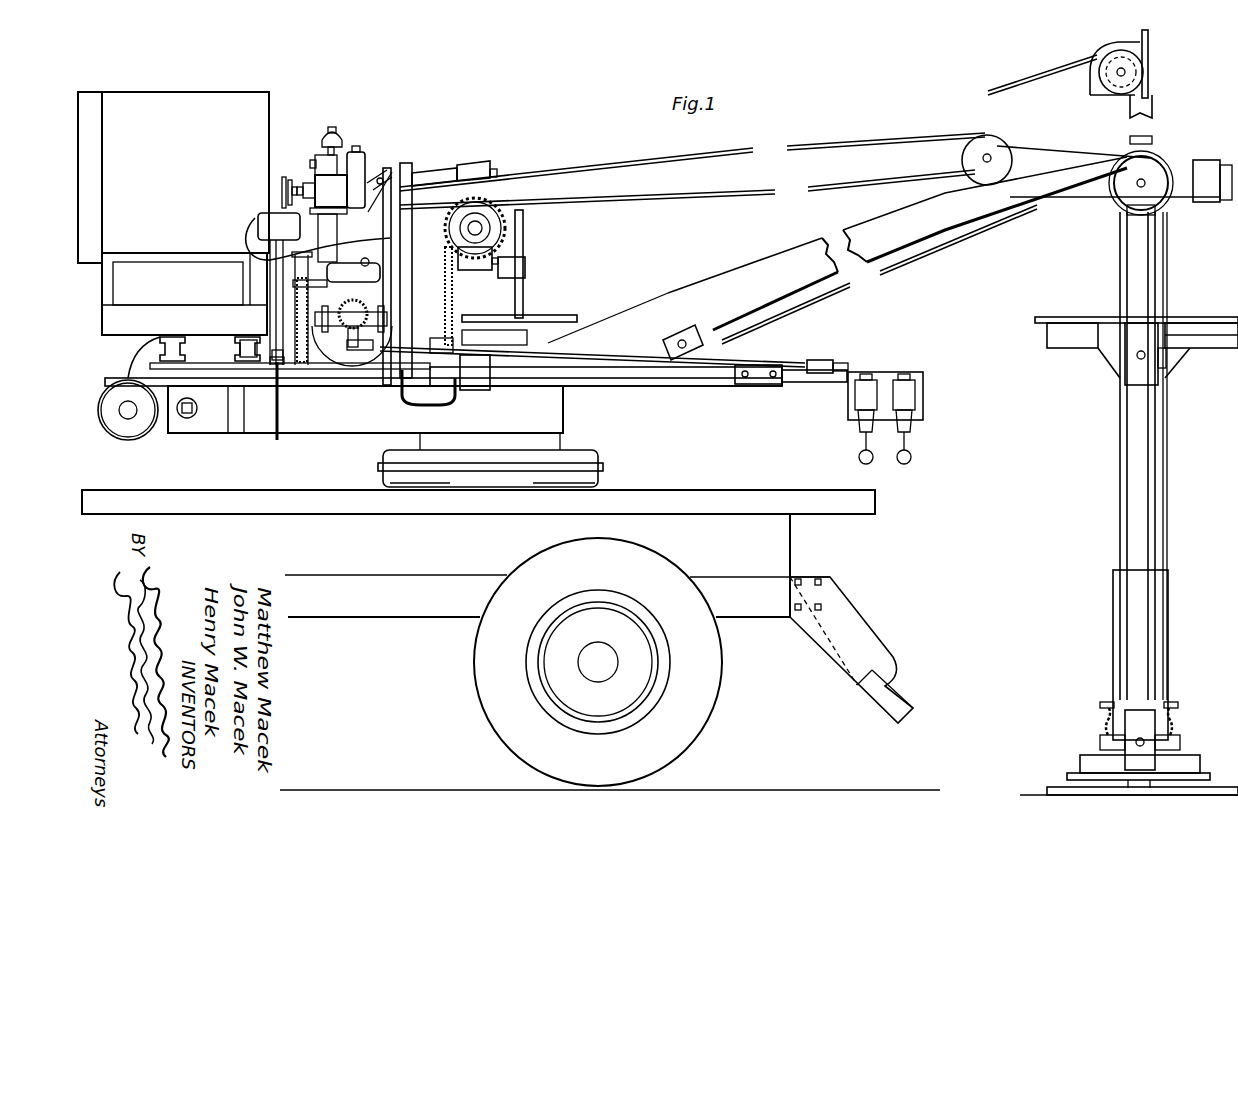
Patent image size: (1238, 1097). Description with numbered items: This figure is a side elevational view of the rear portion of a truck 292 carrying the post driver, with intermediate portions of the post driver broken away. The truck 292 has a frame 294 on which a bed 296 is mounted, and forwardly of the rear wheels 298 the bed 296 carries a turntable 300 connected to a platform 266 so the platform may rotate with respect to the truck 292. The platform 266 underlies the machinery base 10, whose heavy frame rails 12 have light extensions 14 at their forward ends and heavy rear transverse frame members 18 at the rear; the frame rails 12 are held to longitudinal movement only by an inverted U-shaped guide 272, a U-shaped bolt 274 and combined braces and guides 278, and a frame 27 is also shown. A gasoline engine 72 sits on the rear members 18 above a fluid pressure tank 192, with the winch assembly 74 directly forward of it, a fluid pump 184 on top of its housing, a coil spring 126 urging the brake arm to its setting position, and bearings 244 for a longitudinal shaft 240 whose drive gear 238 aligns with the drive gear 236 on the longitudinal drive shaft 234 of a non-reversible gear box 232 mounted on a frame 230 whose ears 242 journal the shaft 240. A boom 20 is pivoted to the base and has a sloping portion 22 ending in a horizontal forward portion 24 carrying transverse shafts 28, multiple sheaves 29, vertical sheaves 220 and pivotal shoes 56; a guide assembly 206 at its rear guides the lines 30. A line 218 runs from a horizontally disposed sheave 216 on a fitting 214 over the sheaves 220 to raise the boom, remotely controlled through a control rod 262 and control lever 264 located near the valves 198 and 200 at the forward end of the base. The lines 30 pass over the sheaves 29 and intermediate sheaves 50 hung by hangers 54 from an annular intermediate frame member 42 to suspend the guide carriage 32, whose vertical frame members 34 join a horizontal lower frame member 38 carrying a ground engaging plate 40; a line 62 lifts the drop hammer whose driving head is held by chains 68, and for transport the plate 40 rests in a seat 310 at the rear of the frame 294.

The machinery base 10 is at (628, 391).
The frame rails 12 is at (723, 374).
The extensions 14 is at (793, 376).
The rear transverse frame members 18 is at (165, 340).
The boom 20 is at (773, 244).
The upwardly and forwardly sloping portion 22 is at (945, 222).
The horizontal forward portion 24 is at (1047, 170).
The carriage frame 27 is at (365, 423).
The transverse shaft 28 is at (1150, 190).
The multiple sheave 29 is at (1148, 168).
The line 30 is at (1040, 208).
The guide carriage 32 is at (1184, 469).
The vertical frame members 34 is at (1148, 112).
The horizontal lower frame member 38 is at (1088, 760).
The ground engaging plate 40 is at (1060, 788).
The annular intermediate frame member 42 is at (1172, 321).
The intermediate sheaves 50 is at (1164, 360).
The hangers 54 is at (1135, 367).
The shoes 56 is at (1130, 213).
The line 62 is at (1028, 75).
The chains 68 is at (1102, 718).
The gasoline engine 72 is at (258, 133).
The winch assembly 74 is at (355, 376).
The coil spring 126 is at (280, 364).
The fluid pump 184 is at (332, 180).
The fluid pressure tank 192 is at (130, 415).
The valve 198 is at (853, 418).
The valve 200 is at (917, 425).
The guide assembly 206 is at (687, 335).
The fitting 214 is at (450, 170).
The sheave 216 is at (500, 166).
The line 218 is at (610, 163).
The vertical sheaves 220 is at (1000, 137).
The frame 230 is at (524, 288).
The gear box 232 is at (500, 248).
The longitudinal drive shaft 234 is at (525, 262).
The drive gear 236 is at (445, 245).
The drive gear 238 is at (478, 340).
The shaft 240 is at (537, 317).
The ears 242 is at (463, 317).
The bearings 244 is at (292, 320).
The control rod 262 is at (763, 362).
The control lever 264 is at (833, 362).
The platform 266 is at (336, 443).
The inverted U-shaped guide 272 is at (483, 373).
The U-shaped bolt 274 is at (277, 422).
The combined braces and guides 278 is at (237, 420).
The truck 292 is at (432, 633).
The frame 294 is at (775, 606).
The bed 296 is at (693, 507).
The rear wheels 298 is at (710, 708).
The turntable 300 is at (600, 465).
The seat 310 is at (833, 588).